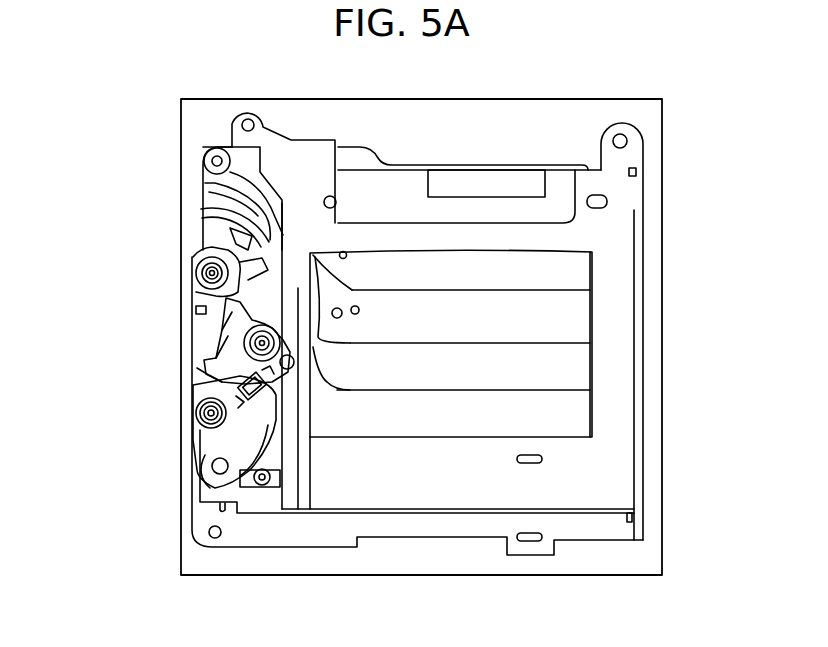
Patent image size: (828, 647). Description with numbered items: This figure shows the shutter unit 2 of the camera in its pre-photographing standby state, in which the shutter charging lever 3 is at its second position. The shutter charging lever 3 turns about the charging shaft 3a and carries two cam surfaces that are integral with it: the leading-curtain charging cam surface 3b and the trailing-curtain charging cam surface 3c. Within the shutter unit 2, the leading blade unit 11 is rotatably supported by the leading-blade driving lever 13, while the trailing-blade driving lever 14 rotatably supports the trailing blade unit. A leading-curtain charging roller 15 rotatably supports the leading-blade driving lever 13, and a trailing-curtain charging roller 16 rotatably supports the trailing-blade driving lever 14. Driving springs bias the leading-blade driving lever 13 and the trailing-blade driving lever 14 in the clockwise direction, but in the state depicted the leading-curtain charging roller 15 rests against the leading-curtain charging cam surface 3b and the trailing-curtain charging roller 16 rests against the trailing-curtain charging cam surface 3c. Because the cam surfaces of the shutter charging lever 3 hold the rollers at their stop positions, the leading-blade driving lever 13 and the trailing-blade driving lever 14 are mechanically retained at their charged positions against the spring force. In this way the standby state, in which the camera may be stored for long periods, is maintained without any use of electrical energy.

The shutter unit 2 is at (403, 100).
The shutter charging lever 3 is at (227, 333).
The charging shaft 3a is at (290, 369).
The leading-curtain charging cam surface 3b is at (197, 372).
The trailing-curtain charging cam surface 3c is at (205, 312).
The leading blade unit 11 is at (562, 367).
The leading-blade driving lever 13 is at (190, 398).
The trailing-blade driving lever 14 is at (218, 248).
The leading-curtain charging roller 15 is at (198, 395).
The trailing-curtain charging roller 16 is at (192, 292).